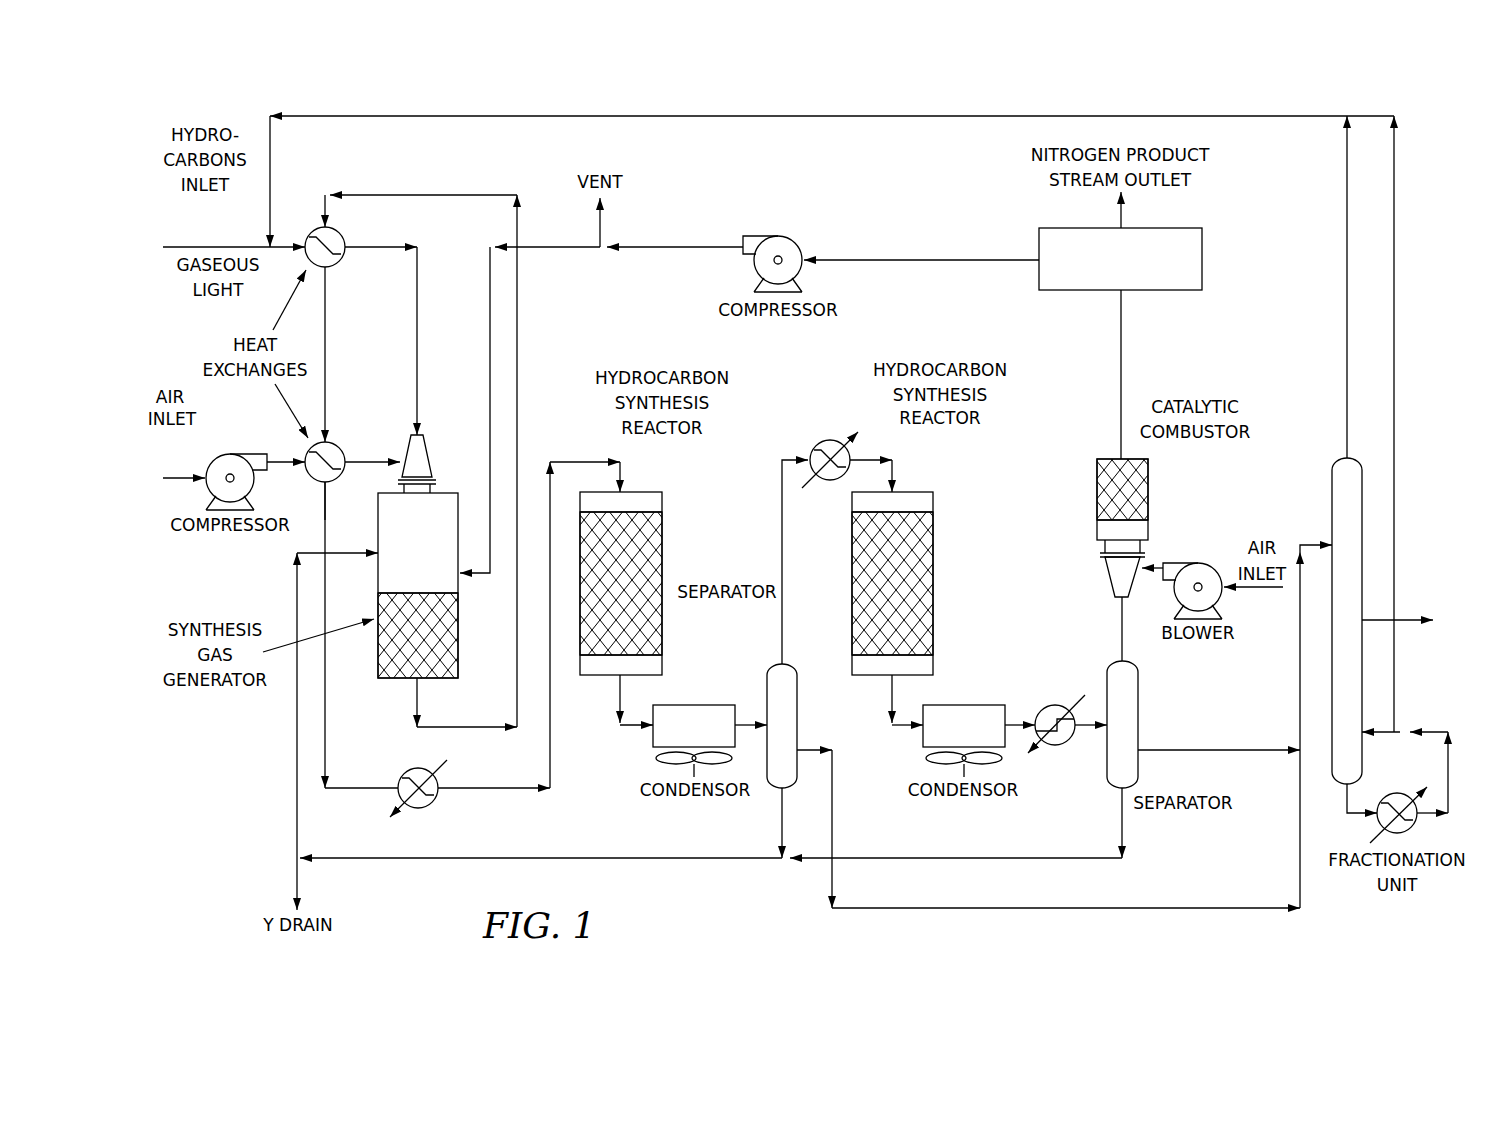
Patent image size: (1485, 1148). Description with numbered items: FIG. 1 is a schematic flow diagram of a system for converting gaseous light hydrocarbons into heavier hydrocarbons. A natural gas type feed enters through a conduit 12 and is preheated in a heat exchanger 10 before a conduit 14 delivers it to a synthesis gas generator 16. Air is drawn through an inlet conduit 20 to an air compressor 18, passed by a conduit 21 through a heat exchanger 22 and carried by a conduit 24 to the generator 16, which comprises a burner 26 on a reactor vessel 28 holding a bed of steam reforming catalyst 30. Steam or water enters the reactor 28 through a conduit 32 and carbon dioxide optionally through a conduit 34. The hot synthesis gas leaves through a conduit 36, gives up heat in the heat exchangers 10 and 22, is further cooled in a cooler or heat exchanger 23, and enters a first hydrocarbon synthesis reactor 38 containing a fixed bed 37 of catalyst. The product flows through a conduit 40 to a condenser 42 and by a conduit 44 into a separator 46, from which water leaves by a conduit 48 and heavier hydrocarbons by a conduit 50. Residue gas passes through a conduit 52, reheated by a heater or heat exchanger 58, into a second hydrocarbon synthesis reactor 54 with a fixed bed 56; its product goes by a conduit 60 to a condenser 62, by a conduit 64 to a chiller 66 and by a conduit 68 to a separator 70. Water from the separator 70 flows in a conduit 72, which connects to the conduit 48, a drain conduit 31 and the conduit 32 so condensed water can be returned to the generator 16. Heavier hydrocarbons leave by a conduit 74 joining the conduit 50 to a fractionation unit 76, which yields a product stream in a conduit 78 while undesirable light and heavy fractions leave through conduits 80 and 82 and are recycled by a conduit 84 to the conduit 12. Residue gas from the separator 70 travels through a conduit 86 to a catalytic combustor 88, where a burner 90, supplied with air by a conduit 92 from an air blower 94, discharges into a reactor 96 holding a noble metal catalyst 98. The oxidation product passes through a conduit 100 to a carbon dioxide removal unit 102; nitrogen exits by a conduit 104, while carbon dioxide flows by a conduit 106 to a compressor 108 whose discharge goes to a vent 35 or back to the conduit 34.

The heat exchanger 10 is at (312, 231).
The conduit 12 is at (204, 246).
The conduit 14 is at (421, 310).
The synthesis gas generator 16 is at (398, 682).
The air compressor 18 is at (240, 458).
The inlet conduit 20 is at (185, 476).
The conduit 21 is at (288, 458).
The heat exchanger 22 is at (335, 482).
The cooler or heat exchanger 23 is at (438, 806).
The conduit 24 is at (378, 458).
The burner 26 is at (430, 445).
The reactor vessel 28 is at (405, 557).
The bed of steam reforming catalyst 30 is at (405, 647).
The drain conduit 31 is at (293, 878).
The conduit 32 is at (365, 556).
The conduit 34 is at (488, 350).
The vent 35 is at (597, 222).
The conduit 36 is at (363, 195).
The fixed bed of hydrocarbon synthesis catalyst 37 is at (609, 594).
The first hydrocarbon synthesis reactor 38 is at (650, 489).
The conduit 40 is at (637, 728).
The condenser 42 is at (681, 739).
The conduit 44 is at (748, 723).
The separator 46 is at (772, 662).
The conduit 48 is at (775, 812).
The conduit 50 is at (835, 812).
The conduit 52 is at (778, 525).
The second hydrocarbon synthesis reactor 54 is at (925, 480).
The fixed bed of hydrocarbon synthesis catalyst 56 is at (880, 594).
The heater or heat exchanger 58 is at (820, 445).
The conduit 60 is at (905, 728).
The condenser 62 is at (951, 739).
The conduit 64 is at (1015, 720).
The chiller 66 is at (1055, 705).
The conduit 68 is at (1076, 734).
The separator 70 is at (1142, 765).
The conduit 72 is at (414, 861).
The conduit 74 is at (1190, 748).
The fractionation unit 76 is at (1330, 495).
The conduit 78 is at (1415, 617).
The conduit 80 is at (1341, 292).
The conduit 82 is at (1398, 247).
The conduit 84 is at (503, 118).
The conduit 86 is at (1118, 620).
The catalytic combustor 88 is at (1150, 475).
The burner 90 is at (1108, 565).
The conduit 92 is at (1148, 563).
The air blower 94 is at (1195, 561).
The reactor 96 is at (1094, 510).
The catalyst 98 is at (1108, 503).
The conduit 100 is at (1125, 360).
The carbon dioxide removal unit 102 is at (1210, 245).
The conduit 104 is at (1116, 220).
The conduit 106 is at (903, 258).
The compressor 108 is at (770, 238).